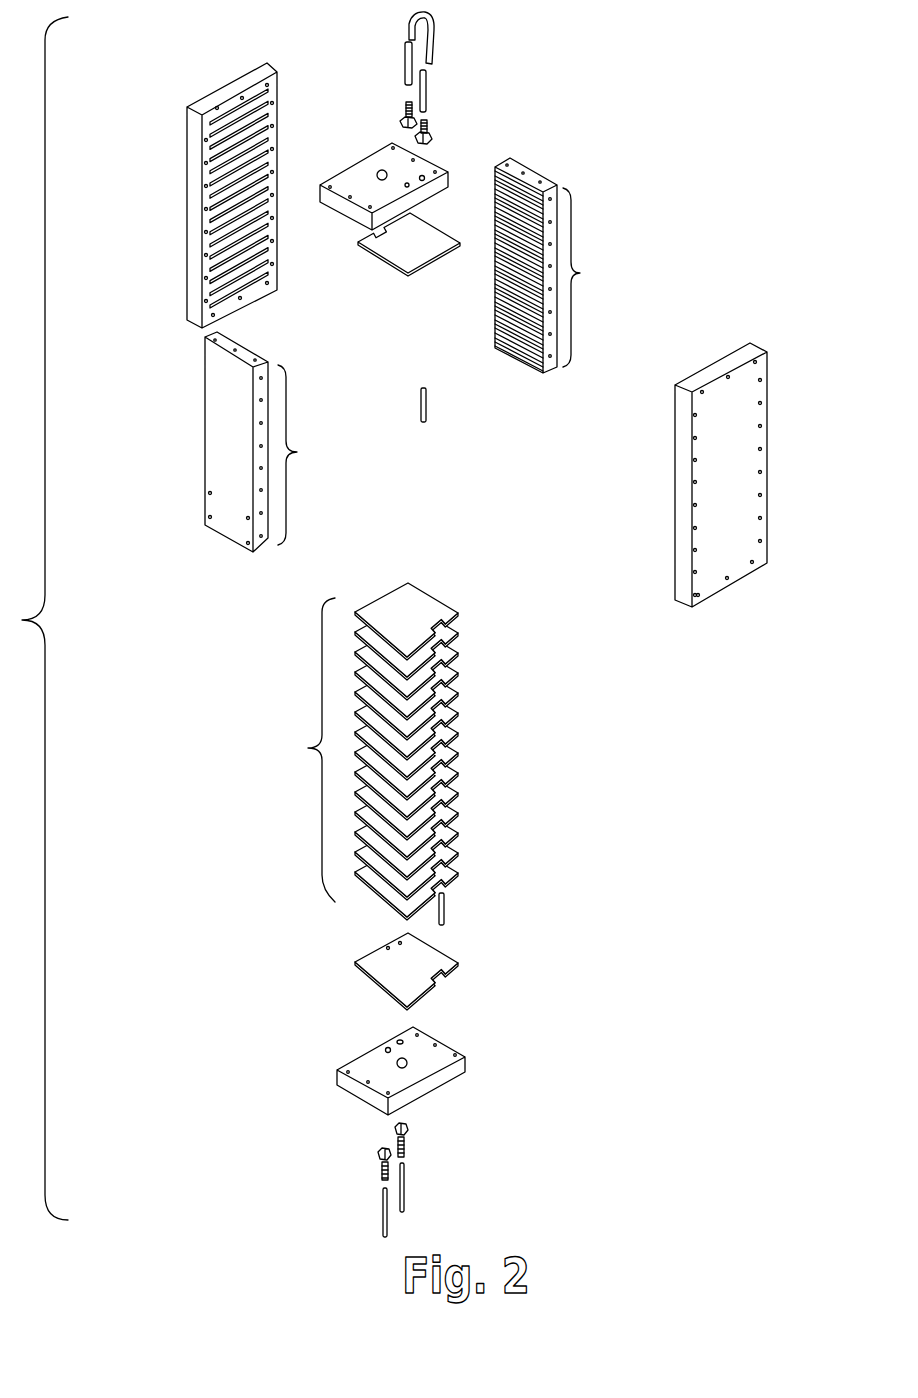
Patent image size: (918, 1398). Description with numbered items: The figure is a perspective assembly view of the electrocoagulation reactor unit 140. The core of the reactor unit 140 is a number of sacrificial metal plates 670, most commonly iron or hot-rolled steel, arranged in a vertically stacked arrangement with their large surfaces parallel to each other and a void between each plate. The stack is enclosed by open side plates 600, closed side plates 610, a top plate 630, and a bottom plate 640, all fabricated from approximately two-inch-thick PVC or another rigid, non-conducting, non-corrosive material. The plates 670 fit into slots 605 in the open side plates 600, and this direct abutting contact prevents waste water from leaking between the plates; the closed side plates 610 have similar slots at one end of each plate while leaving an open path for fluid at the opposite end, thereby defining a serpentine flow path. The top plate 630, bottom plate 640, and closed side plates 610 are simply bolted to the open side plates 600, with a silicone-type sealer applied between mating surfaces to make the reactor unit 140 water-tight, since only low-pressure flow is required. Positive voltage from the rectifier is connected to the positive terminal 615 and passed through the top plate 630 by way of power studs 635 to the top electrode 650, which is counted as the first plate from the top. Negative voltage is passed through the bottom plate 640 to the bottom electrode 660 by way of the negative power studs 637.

The reactor unit 140 is at (596, 859).
The open side plates 600 is at (537, 178).
The slots 605 is at (445, 913).
The closed side plates 610 is at (190, 220).
The positive terminal 615 is at (440, 32).
The top plate 630 is at (375, 167).
The power studs 635 is at (408, 80).
The negative power studs 637 is at (388, 1223).
The bottom plate 640 is at (443, 1057).
The top electrode 650 is at (372, 245).
The bottom gasket plate 660 is at (435, 960).
The sacrificial metal plates 670 is at (358, 751).